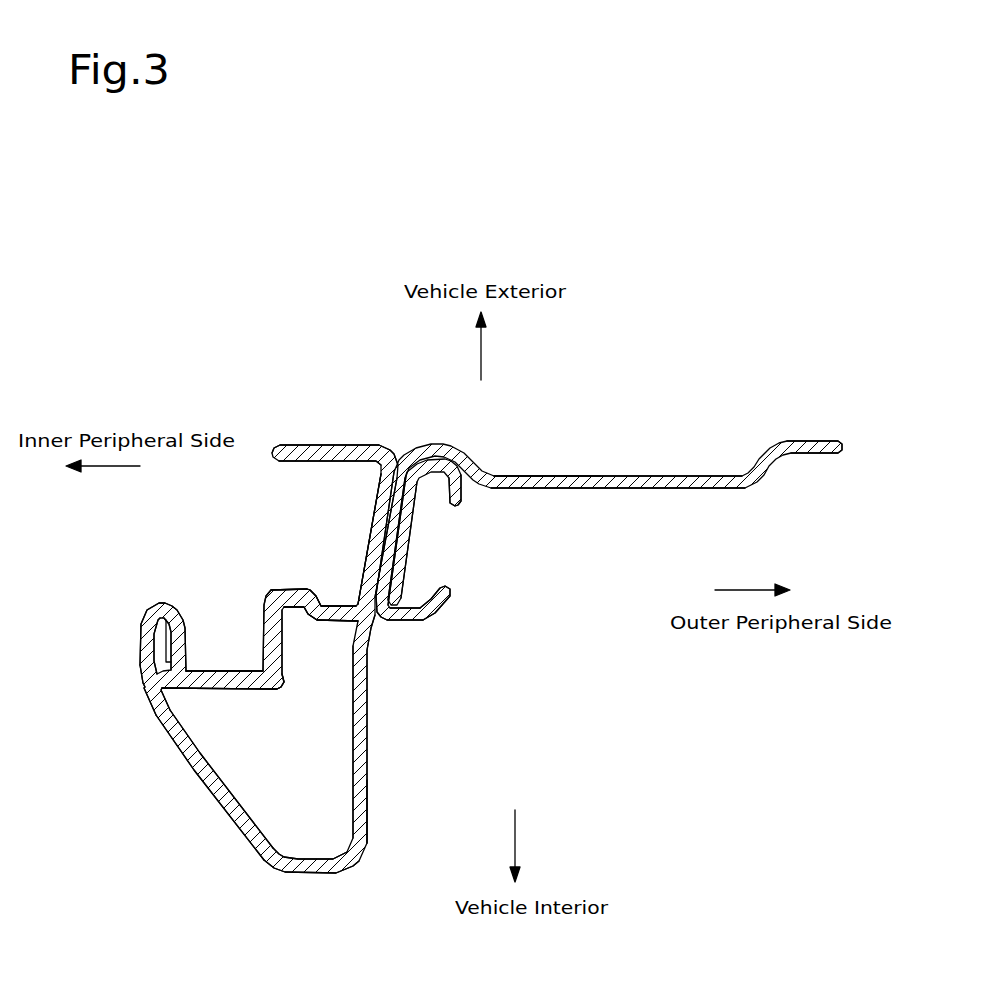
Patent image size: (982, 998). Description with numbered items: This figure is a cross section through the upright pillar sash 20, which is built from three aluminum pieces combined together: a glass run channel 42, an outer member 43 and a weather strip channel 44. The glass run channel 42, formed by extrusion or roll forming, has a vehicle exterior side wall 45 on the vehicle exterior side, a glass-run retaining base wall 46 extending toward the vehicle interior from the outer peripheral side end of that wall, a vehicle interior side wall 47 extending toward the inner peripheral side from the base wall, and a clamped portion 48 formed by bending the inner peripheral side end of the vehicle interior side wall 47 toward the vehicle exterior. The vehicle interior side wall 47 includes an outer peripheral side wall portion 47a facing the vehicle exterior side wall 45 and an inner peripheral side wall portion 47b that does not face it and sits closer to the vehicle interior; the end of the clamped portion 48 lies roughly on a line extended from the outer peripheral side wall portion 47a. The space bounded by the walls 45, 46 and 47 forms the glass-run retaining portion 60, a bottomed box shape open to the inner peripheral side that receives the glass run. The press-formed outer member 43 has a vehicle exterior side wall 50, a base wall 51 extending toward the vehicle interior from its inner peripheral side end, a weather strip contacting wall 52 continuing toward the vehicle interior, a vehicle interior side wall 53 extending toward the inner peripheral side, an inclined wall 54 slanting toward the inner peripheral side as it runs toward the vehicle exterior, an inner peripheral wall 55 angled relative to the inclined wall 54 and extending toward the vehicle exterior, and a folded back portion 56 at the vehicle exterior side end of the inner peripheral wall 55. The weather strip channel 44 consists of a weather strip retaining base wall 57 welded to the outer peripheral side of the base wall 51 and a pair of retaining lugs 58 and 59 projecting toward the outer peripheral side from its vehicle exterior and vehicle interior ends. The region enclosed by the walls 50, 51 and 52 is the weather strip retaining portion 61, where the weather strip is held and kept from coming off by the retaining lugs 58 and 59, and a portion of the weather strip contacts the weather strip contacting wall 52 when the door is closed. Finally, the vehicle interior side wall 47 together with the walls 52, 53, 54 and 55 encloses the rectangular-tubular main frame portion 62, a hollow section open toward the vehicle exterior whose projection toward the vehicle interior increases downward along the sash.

The upright pillar sash 20 is at (720, 366).
The glass run channel 42 is at (262, 434).
The outer member 43 is at (821, 426).
The weather strip channel 44 is at (436, 635).
The vehicle exterior side wall 45 is at (337, 443).
The glass-run retaining base wall 46 is at (383, 490).
The vehicle interior side wall 47 is at (150, 541).
The outer peripheral side wall portion 47a is at (298, 592).
The inner peripheral side wall portion 47b is at (229, 672).
The clamped portion 48 is at (158, 650).
The vehicle exterior side wall 50 is at (641, 476).
The base wall 51 is at (395, 516).
The weather strip contacting wall 52 is at (367, 750).
The vehicle interior side wall 53 is at (302, 873).
The inclined wall 54 is at (207, 788).
The inner peripheral wall 55 is at (150, 692).
The folded back portion 56 is at (166, 655).
The weather strip retaining base wall 57 is at (403, 533).
The retaining lug 58 is at (463, 495).
The retaining lug 59 is at (448, 598).
The glass-run retaining portion 60 is at (266, 521).
The weather strip retaining portion 61 is at (569, 574).
The main frame portion 62 is at (379, 824).